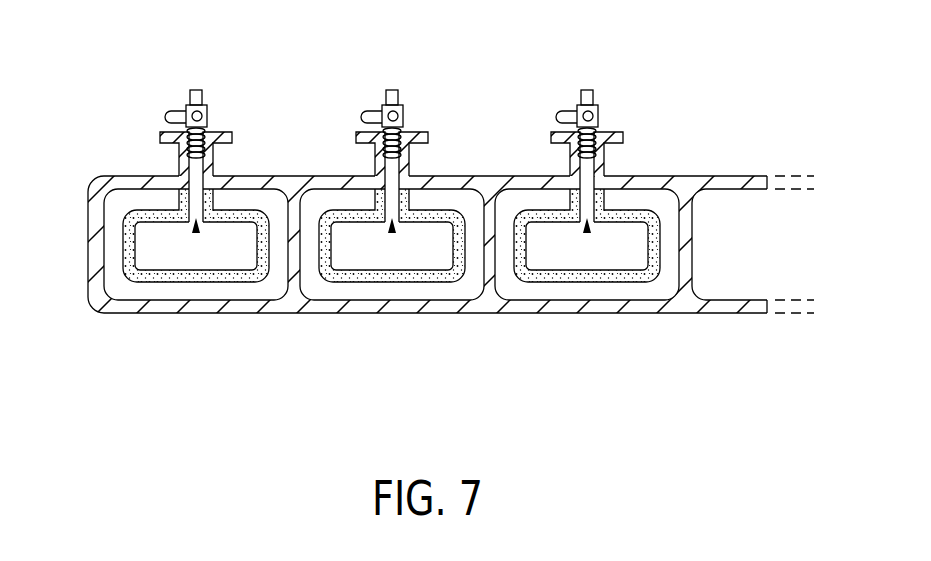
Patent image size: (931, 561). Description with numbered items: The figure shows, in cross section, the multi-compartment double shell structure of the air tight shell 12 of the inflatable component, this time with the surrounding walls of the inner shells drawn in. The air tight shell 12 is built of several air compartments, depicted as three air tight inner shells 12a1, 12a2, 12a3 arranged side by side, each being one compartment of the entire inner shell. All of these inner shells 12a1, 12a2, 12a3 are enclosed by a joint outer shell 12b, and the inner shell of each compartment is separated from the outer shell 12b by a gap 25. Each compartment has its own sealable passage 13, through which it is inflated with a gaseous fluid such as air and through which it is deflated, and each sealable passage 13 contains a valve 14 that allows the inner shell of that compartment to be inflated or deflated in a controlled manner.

The air tight shell 12 is at (465, 179).
The air tight inner shell 12a1 is at (196, 264).
The air tight inner shell 12a2 is at (392, 264).
The air tight inner shell 12a3 is at (587, 264).
The outer shell 12b is at (328, 178).
The sealable passage 13 is at (362, 291).
The valve 14 is at (407, 113).
The gap 25 is at (408, 299).